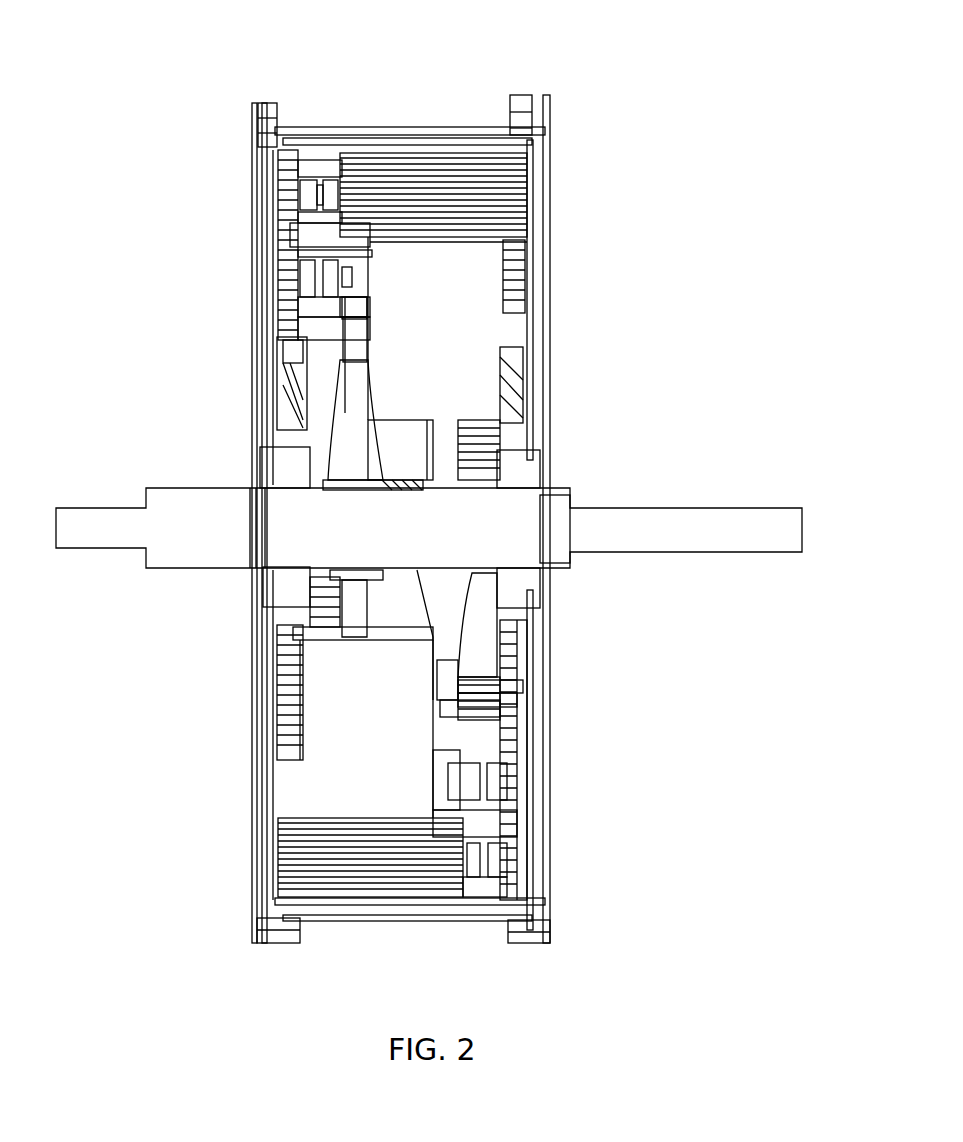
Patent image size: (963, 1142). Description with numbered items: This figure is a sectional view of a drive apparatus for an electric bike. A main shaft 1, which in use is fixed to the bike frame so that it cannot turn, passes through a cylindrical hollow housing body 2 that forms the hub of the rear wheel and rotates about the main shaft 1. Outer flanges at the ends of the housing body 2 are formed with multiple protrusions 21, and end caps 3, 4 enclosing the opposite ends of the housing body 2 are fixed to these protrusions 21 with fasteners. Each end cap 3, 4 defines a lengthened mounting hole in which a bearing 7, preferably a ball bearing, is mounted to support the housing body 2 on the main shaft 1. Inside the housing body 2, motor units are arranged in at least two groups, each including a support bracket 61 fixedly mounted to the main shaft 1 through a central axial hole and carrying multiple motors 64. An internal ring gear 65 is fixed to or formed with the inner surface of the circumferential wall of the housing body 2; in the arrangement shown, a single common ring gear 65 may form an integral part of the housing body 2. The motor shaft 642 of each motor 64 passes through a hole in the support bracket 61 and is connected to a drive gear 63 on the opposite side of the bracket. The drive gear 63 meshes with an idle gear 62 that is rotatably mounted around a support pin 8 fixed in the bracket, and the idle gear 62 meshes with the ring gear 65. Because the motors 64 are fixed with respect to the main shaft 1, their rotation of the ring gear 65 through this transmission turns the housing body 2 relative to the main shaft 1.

The main shaft 1 is at (207, 542).
The housing body 2 is at (373, 137).
The protrusions 21 is at (510, 98).
The end cap 3 is at (268, 267).
The end cap 4 is at (540, 253).
The bearing 7 is at (520, 470).
The support pin 8 is at (273, 200).
The support bracket 61 is at (352, 450).
The idle gear 62 is at (320, 177).
The drive gear 63 is at (312, 313).
The motor 64 is at (302, 408).
The motor shaft 642 is at (485, 728).
The internal ring gear 65 is at (273, 180).